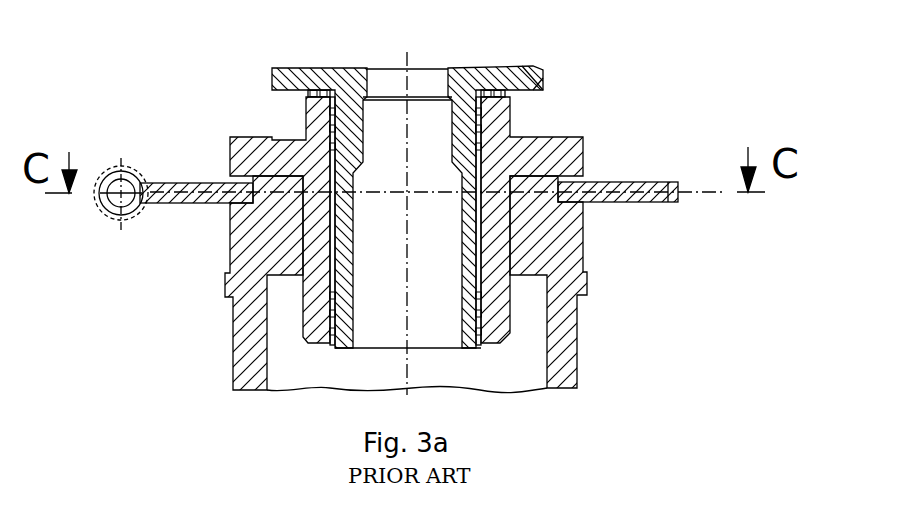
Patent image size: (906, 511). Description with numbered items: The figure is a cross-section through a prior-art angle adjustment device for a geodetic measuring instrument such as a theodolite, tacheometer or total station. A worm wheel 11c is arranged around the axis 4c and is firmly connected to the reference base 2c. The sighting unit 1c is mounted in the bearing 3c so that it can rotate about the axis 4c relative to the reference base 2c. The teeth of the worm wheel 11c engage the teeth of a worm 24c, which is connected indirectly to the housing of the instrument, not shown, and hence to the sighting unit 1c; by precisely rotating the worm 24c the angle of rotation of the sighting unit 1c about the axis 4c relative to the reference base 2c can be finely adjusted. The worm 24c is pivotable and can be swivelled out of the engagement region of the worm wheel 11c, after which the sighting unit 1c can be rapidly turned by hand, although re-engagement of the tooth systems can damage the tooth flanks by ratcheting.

The sighting unit 1c is at (525, 82).
The reference base 2c is at (497, 322).
The bearing 3c is at (333, 338).
The axis 4c is at (408, 88).
The worm wheel 11c is at (205, 187).
The worm 24c is at (128, 187).